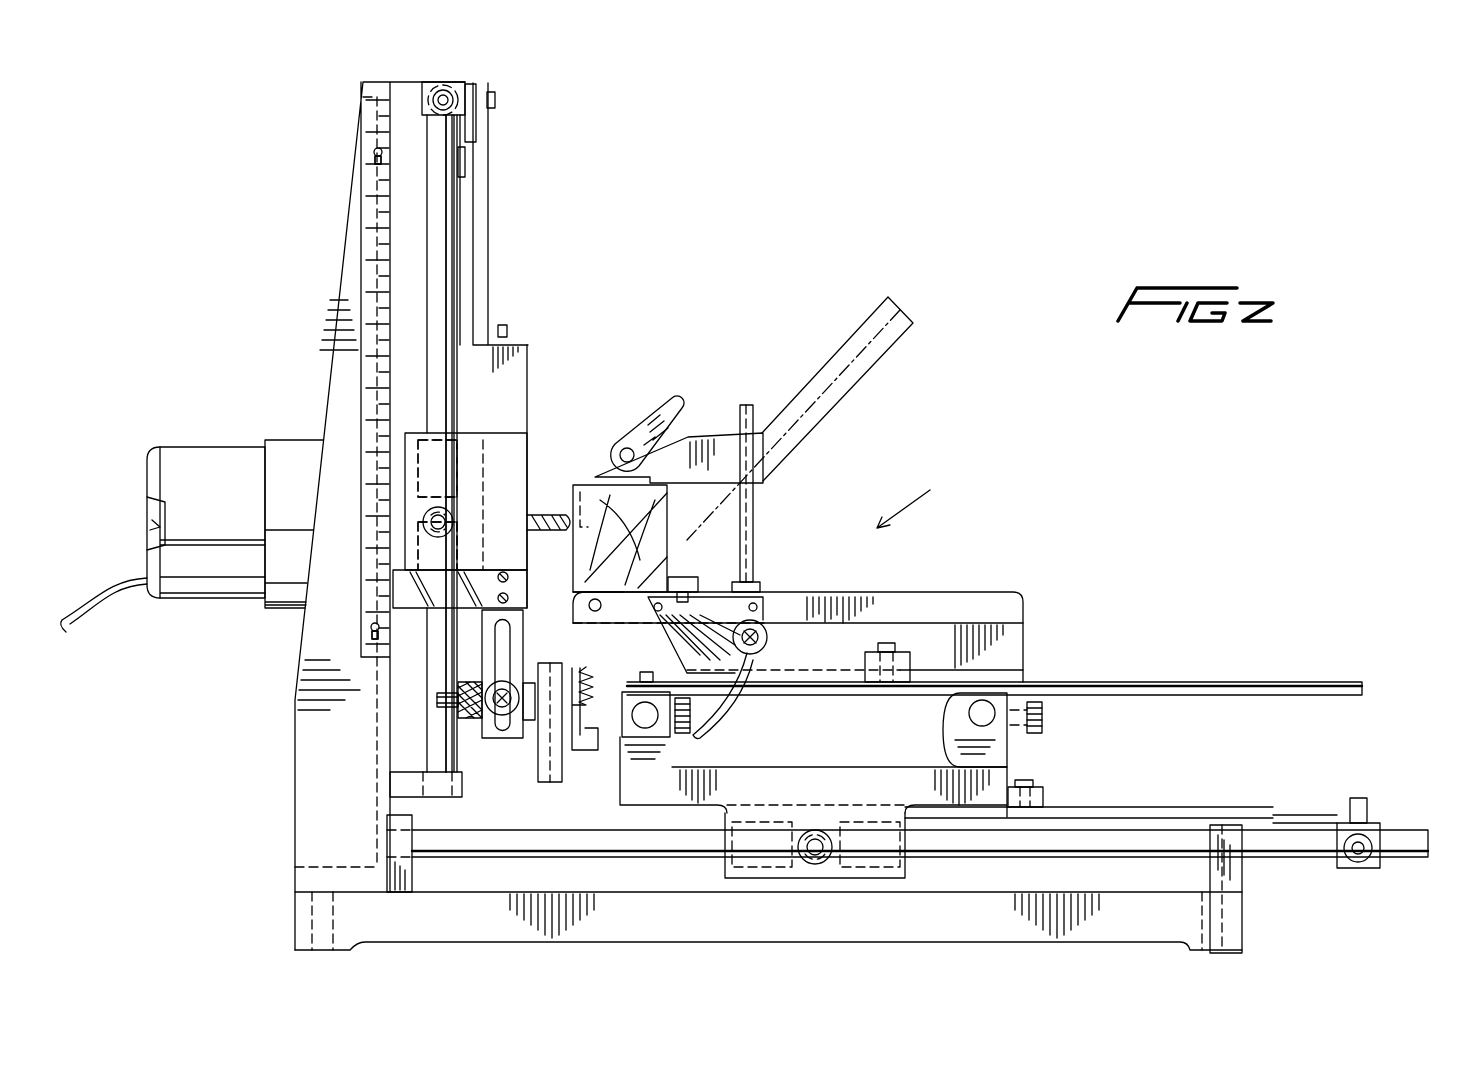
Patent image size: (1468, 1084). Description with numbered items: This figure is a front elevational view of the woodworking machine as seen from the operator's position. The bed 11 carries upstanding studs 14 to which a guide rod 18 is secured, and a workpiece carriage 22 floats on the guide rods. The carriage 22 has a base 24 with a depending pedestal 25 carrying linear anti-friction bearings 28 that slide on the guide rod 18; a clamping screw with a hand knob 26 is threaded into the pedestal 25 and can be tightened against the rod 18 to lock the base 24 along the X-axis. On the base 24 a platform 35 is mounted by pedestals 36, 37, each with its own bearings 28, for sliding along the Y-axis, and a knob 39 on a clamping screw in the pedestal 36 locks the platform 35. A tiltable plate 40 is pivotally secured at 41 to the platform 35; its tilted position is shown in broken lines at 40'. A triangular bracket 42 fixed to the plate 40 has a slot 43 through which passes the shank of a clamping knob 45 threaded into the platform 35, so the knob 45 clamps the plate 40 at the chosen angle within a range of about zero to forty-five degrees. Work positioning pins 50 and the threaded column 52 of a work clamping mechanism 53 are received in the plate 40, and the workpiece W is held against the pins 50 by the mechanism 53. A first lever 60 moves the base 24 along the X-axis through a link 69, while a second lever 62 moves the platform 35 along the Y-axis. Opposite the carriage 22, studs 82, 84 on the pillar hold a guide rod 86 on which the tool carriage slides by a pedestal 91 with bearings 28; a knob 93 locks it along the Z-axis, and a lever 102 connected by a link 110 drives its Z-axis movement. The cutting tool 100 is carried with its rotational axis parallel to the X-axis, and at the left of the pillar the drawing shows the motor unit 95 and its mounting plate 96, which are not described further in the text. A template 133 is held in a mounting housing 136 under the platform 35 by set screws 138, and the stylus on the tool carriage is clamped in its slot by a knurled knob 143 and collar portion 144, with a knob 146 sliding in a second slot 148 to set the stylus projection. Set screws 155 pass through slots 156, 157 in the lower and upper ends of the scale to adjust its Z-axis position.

The bed 11 is at (680, 925).
The upstanding studs 14 is at (413, 885).
The guide rod 18 is at (1035, 857).
The workpiece carriage 22 is at (936, 495).
The base 24 is at (817, 767).
The pedestal 25 is at (852, 878).
The hand knob 26 is at (815, 863).
The linear anti-friction bearings 28 is at (462, 470).
The platform 35 is at (1023, 657).
The pedestal 36 is at (1010, 738).
The pedestal 37 is at (675, 738).
The knob 39 is at (1042, 718).
The tiltable plate 40 is at (834, 636).
The moved position of plate 40' is at (812, 418).
The pivot 41 is at (588, 604).
The triangular bracket 42 is at (765, 592).
The slot 43 is at (723, 705).
The clamping knob 45 is at (767, 638).
The work positioning pins 50 is at (687, 577).
The threaded column 52 is at (755, 525).
The work clamping mechanism 53 is at (705, 417).
The first lever 60 is at (1308, 822).
The second lever 62 is at (1220, 697).
The link 69 is at (1212, 807).
The studs 82 is at (420, 82).
The studs 84 is at (414, 170).
The guide rod 86 is at (463, 255).
The pedestal 91 is at (412, 433).
The knob 93 is at (455, 515).
The motor 95 is at (193, 602).
The mounting plate 96 is at (280, 608).
The cutting tool 100 is at (547, 515).
The lever 102 is at (472, 84).
The link 110 is at (490, 190).
The template 133 is at (547, 785).
The mounting housing 136 is at (585, 750).
The set screws 138 is at (585, 667).
The knurled knob 143 is at (470, 723).
The collar portion 144 is at (532, 723).
The knob 146 is at (513, 683).
The second slot 148 is at (512, 633).
The set screws 155 is at (372, 152).
The slot 156 is at (371, 636).
The slot 157 is at (374, 160).
The workpiece W is at (572, 485).